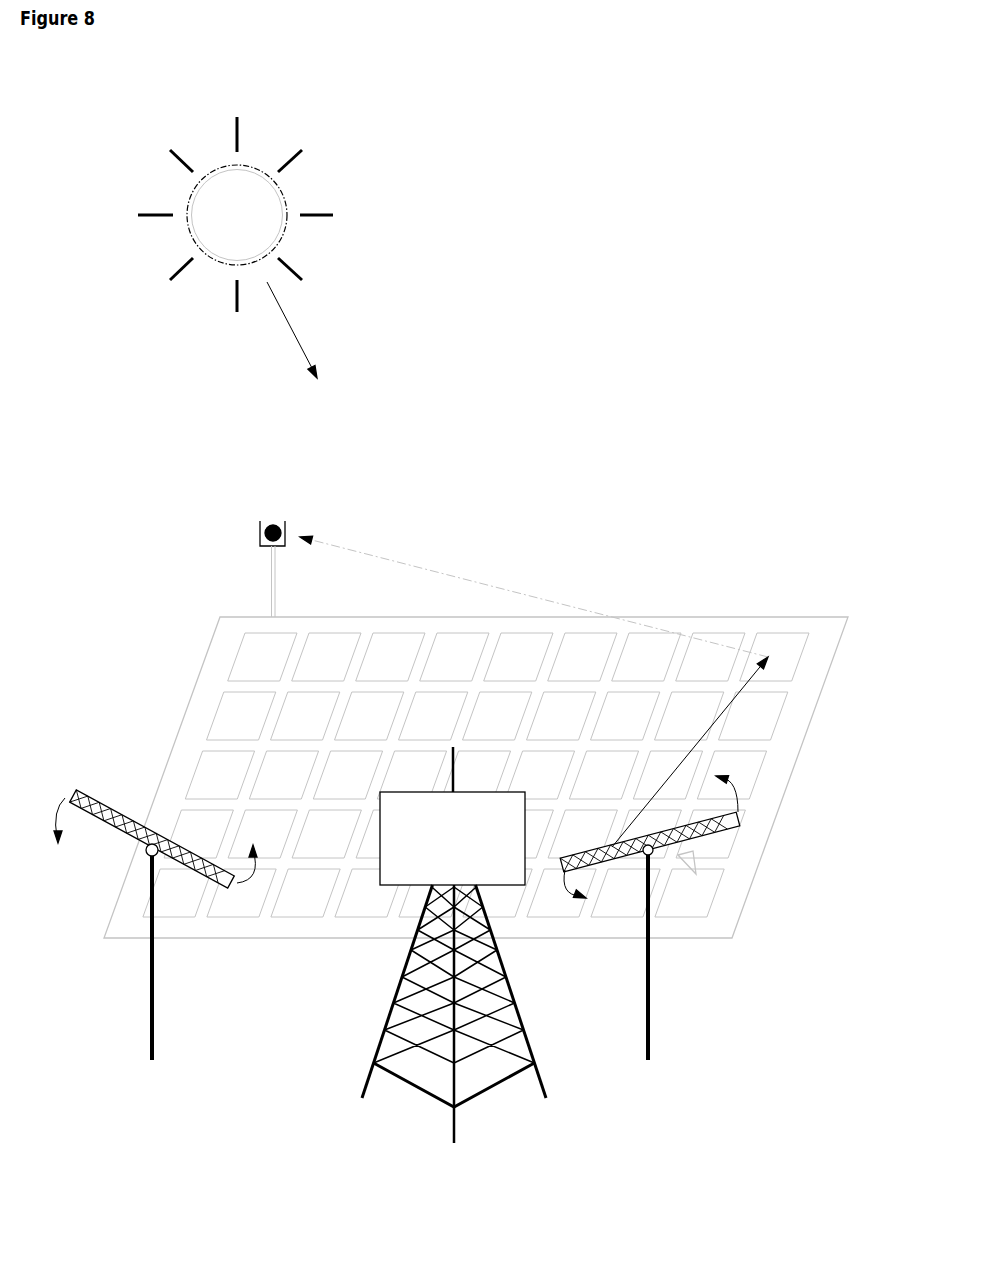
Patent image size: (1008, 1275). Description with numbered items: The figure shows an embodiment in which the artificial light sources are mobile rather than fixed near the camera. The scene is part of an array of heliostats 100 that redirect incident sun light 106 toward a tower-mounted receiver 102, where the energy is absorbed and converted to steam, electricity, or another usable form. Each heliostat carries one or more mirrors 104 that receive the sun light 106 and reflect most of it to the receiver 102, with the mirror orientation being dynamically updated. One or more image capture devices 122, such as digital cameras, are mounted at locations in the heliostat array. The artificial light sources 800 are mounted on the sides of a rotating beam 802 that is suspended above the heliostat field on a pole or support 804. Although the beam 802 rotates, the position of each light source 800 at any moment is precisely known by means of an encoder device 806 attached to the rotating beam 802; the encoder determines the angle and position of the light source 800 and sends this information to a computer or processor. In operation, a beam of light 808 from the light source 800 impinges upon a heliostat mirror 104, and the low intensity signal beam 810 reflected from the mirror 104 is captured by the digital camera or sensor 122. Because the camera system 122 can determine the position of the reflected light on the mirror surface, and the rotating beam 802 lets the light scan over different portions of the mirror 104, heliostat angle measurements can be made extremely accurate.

The array of heliostats 100 is at (505, 764).
The tower-mounted receiver 102 is at (454, 945).
The mirror 104 is at (738, 633).
The incident sun light 106 is at (295, 330).
The image capture device 122 is at (282, 510).
The artificial light source 800 is at (607, 860).
The rotating beam 802 is at (735, 844).
The pole or support 804 is at (652, 1050).
The encoder device 806 is at (155, 833).
The beam of light 808 is at (730, 710).
The low intensity signal beam 810 is at (393, 562).